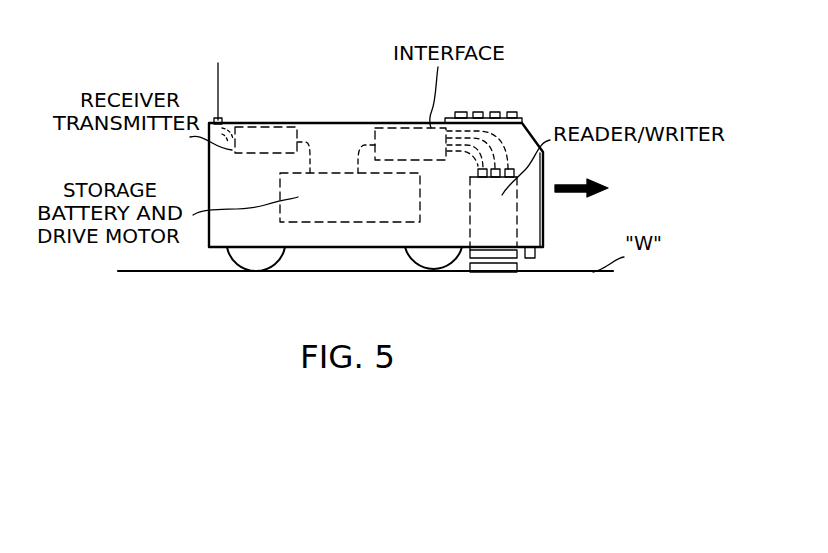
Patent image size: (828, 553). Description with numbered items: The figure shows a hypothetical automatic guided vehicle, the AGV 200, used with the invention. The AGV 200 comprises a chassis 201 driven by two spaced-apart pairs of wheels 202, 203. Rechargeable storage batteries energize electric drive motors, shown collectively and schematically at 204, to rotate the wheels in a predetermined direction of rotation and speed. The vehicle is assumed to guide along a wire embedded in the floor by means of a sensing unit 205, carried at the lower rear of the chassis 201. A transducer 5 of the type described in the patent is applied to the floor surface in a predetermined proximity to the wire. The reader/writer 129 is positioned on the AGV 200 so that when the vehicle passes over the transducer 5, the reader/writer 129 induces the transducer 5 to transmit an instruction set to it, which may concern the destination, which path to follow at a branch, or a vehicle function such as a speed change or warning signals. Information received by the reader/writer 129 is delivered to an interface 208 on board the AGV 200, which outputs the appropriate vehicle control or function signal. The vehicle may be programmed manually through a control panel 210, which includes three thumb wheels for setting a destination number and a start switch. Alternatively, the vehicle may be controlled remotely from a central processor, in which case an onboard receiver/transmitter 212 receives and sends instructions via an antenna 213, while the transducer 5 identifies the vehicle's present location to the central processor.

The AGV vehicle 200 is at (310, 84).
The chassis 201 is at (209, 174).
The antenna 213 is at (218, 83).
The receiver/transmitter 212 is at (258, 128).
The interface 208 is at (409, 129).
The control panel 210 is at (529, 88).
The storage batteries and electric drive motors 204 is at (360, 214).
The pair of wheels 202 is at (262, 260).
The pair of wheels 203 is at (433, 258).
The reader/writer 129 is at (472, 256).
The transducer 5 is at (503, 273).
The sensing unit 205 is at (537, 263).